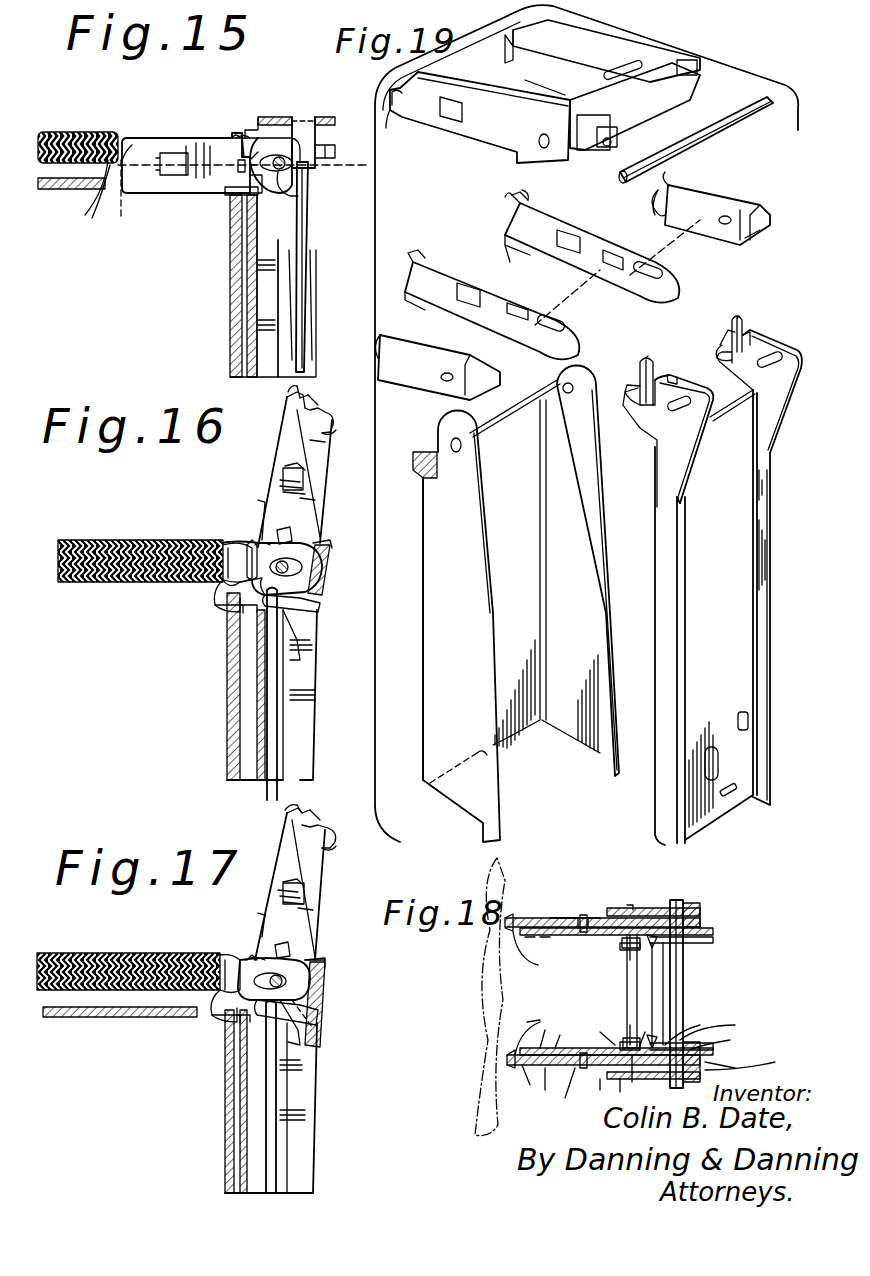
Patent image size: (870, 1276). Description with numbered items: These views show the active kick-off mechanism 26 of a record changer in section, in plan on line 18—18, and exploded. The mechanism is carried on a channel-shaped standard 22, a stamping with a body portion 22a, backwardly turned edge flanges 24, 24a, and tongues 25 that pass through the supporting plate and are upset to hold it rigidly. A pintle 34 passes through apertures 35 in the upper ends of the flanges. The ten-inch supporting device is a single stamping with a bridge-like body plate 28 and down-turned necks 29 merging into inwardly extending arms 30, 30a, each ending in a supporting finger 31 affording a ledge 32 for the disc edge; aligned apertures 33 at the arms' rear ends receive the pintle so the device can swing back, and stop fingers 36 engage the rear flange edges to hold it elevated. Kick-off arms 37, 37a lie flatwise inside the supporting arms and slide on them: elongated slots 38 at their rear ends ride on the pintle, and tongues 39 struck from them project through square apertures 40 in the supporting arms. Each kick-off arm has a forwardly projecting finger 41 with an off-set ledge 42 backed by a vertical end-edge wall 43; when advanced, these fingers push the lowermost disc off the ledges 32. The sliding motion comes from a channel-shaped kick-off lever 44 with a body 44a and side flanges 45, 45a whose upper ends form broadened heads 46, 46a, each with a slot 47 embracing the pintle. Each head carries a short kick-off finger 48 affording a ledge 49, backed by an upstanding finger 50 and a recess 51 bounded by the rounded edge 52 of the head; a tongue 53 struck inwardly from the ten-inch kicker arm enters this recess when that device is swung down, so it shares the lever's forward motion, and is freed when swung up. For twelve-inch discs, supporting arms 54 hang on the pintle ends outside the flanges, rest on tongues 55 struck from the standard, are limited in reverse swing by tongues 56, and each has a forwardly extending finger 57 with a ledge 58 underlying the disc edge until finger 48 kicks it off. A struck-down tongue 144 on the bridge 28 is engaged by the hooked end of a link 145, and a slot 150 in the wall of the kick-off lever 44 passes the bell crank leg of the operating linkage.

In FIG. 15, the cable 18 is at (72, 160).
In FIG. 15, the channel-shaped standard 22 is at (230, 323).
In FIG. 16, the channel-shaped standard 22 is at (227, 696).
In FIG. 17, the channel-shaped standard 22 is at (225, 1106).
In FIG. 18, the channel-shaped standard 22 is at (627, 994).
In FIG. 19, the channel-shaped standard 22 is at (452, 607).
In FIG. 19, the body portion 22a is at (537, 512).
In FIG. 15, the edge flange 24 is at (310, 311).
In FIG. 16, the edge flange 24 is at (305, 755).
In FIG. 18, the edge flange 24 is at (703, 915).
In FIG. 19, the edge flange 24 is at (437, 538).
In FIG. 17, the edge flange 24a is at (300, 1137).
In FIG. 19, the edge flange 24a is at (590, 505).
In FIG. 19, the tongues 25 is at (600, 767).
In FIG. 15, the active kick-off mechanism 26 is at (236, 124).
In FIG. 16, the active kick-off mechanism 26 is at (232, 535).
In FIG. 17, the active kick-off mechanism 26 is at (243, 950).
In FIG. 18, the active kick-off mechanism 26 is at (562, 918).
In FIG. 15, the bridge-like body plate 28 is at (280, 117).
In FIG. 16, the bridge-like body plate 28 is at (324, 580).
In FIG. 17, the bridge-like body plate 28 is at (322, 990).
In FIG. 19, the bridge-like body plate 28 is at (688, 93).
In FIG. 15, the down-turned neck 29 is at (252, 130).
In FIG. 17, the down-turned neck 29 is at (325, 957).
In FIG. 19, the down-turned neck 29 is at (525, 90).
In FIG. 16, the inwardly extending arm 30 is at (330, 414).
In FIG. 18, the inwardly extending arm 30 is at (522, 1065).
In FIG. 19, the inwardly extending arm 30 is at (472, 138).
In FIG. 17, the inwardly extending arm 30a is at (338, 832).
In FIG. 18, the inwardly extending arm 30a is at (535, 918).
In FIG. 19, the inwardly extending arm 30a is at (530, 38).
In FIG. 16, the supporting finger 31 is at (290, 393).
In FIG. 17, the supporting finger 31 is at (287, 808).
In FIG. 18, the supporting finger 31 is at (512, 918).
In FIG. 19, the supporting finger 31 is at (392, 108).
In FIG. 15, the ledge 32 is at (132, 200).
In FIG. 16, the ledge 32 is at (313, 386).
In FIG. 17, the ledge 32 is at (310, 805).
In FIG. 19, the ledge 32 is at (388, 128).
In FIG. 19, the aligned apertures 33 is at (546, 148).
In FIG. 15, the pintle 34 is at (305, 204).
In FIG. 16, the pintle 34 is at (312, 527).
In FIG. 17, the pintle 34 is at (300, 950).
In FIG. 18, the pintle 34 is at (684, 985).
In FIG. 19, the pintle 34 is at (720, 132).
In FIG. 19, the apertures 35 is at (456, 438).
In FIG. 19, the stop fingers 36 is at (698, 72).
In FIG. 16, the kick-off arm 37 is at (285, 446).
In FIG. 18, the kick-off arm 37 is at (560, 1048).
In FIG. 19, the kick-off arm 37 is at (520, 252).
In FIG. 15, the kick-off arm 37a is at (170, 193).
In FIG. 17, the kick-off arm 37a is at (310, 860).
In FIG. 18, the kick-off arm 37a is at (555, 937).
In FIG. 19, the kick-off arm 37a is at (588, 270).
In FIG. 18, the elongated slots 38 is at (690, 948).
In FIG. 19, the elongated slots 38 is at (665, 275).
In FIG. 15, the tongues 39 is at (170, 153).
In FIG. 16, the tongues 39 is at (305, 475).
In FIG. 17, the tongues 39 is at (306, 887).
In FIG. 18, the tongues 39 is at (590, 916).
In FIG. 19, the tongues 39 is at (582, 238).
In FIG. 16, the square apertures 40 is at (285, 466).
In FIG. 17, the square apertures 40 is at (285, 883).
In FIG. 18, the square apertures 40 is at (583, 918).
In FIG. 19, the square apertures 40 is at (455, 118).
In FIG. 15, the forwardly projecting finger 41 is at (100, 215).
In FIG. 16, the forwardly projecting finger 41 is at (292, 415).
In FIG. 17, the forwardly projecting finger 41 is at (290, 832).
In FIG. 18, the forwardly projecting finger 41 is at (530, 940).
In FIG. 19, the forwardly projecting finger 41 is at (515, 248).
In FIG. 15, the off-set ledge 42 is at (84, 216).
In FIG. 16, the off-set ledge 42 is at (320, 400).
In FIG. 17, the off-set ledge 42 is at (322, 817).
In FIG. 18, the off-set ledge 42 is at (513, 938).
In FIG. 19, the off-set ledge 42 is at (508, 198).
In FIG. 15, the vertical end-edge wall 43 is at (130, 147).
In FIG. 16, the vertical end-edge wall 43 is at (341, 431).
In FIG. 17, the vertical end-edge wall 43 is at (342, 846).
In FIG. 18, the vertical end-edge wall 43 is at (545, 937).
In FIG. 19, the vertical end-edge wall 43 is at (525, 200).
In FIG. 15, the kick-off lever 44 is at (247, 280).
In FIG. 16, the kick-off lever 44 is at (227, 727).
In FIG. 17, the kick-off lever 44 is at (240, 1131).
In FIG. 18, the kick-off lever 44 is at (652, 1008).
In FIG. 19, the body 44a is at (743, 564).
In FIG. 15, the side flange 45 is at (265, 300).
In FIG. 17, the side flange 45 is at (278, 1112).
In FIG. 19, the side flange 45 is at (672, 617).
In FIG. 16, the side flange 45a is at (300, 727).
In FIG. 19, the side flange 45a is at (767, 595).
In FIG. 15, the broadened head 46 is at (295, 188).
In FIG. 16, the broadened head 46 is at (290, 630).
In FIG. 17, the broadened head 46 is at (295, 1000).
In FIG. 18, the broadened head 46 is at (715, 933).
In FIG. 19, the broadened head 46 is at (683, 443).
In FIG. 19, the broadened head 46a is at (788, 410).
In FIG. 16, the slot 47 is at (303, 565).
In FIG. 17, the slot 47 is at (258, 965).
In FIG. 18, the slot 47 is at (700, 942).
In FIG. 19, the slot 47 is at (683, 398).
In FIG. 15, the kick-off finger 48 is at (252, 165).
In FIG. 16, the kick-off finger 48 is at (225, 585).
In FIG. 17, the kick-off finger 48 is at (218, 1005).
In FIG. 18, the kick-off finger 48 is at (622, 942).
In FIG. 19, the kick-off finger 48 is at (628, 408).
In FIG. 15, the ledge 49 is at (220, 178).
In FIG. 16, the ledge 49 is at (225, 545).
In FIG. 17, the ledge 49 is at (161, 1028).
In FIG. 18, the ledge 49 is at (628, 950).
In FIG. 19, the ledge 49 is at (636, 380).
In FIG. 15, the upstanding finger 50 is at (236, 138).
In FIG. 16, the upstanding finger 50 is at (232, 543).
In FIG. 17, the upstanding finger 50 is at (232, 958).
In FIG. 18, the upstanding finger 50 is at (625, 914).
In FIG. 19, the upstanding finger 50 is at (640, 362).
In FIG. 15, the recess 51 is at (243, 138).
In FIG. 16, the recess 51 is at (252, 540).
In FIG. 17, the recess 51 is at (245, 955).
In FIG. 19, the recess 51 is at (650, 358).
In FIG. 15, the rounded edge 52 is at (246, 170).
In FIG. 16, the rounded edge 52 is at (260, 500).
In FIG. 17, the rounded edge 52 is at (250, 955).
In FIG. 19, the rounded edge 52 is at (670, 372).
In FIG. 15, the tongue 53 is at (235, 195).
In FIG. 16, the tongue 53 is at (290, 530).
In FIG. 17, the tongue 53 is at (288, 945).
In FIG. 18, the tongue 53 is at (650, 950).
In FIG. 19, the tongue 53 is at (620, 258).
In FIG. 16, the supporting arm 54 is at (222, 607).
In FIG. 17, the supporting arm 54 is at (220, 1020).
In FIG. 18, the supporting arm 54 is at (652, 908).
In FIG. 19, the supporting arm 54 is at (715, 190).
In FIG. 18, the tongues 55 is at (637, 905).
In FIG. 19, the tongues 55 is at (415, 456).
In FIG. 15, the tongues 56 is at (335, 150).
In FIG. 16, the tongues 56 is at (334, 539).
In FIG. 17, the tongues 56 is at (326, 966).
In FIG. 19, the tongues 56 is at (760, 228).
In FIG. 19, the forwardly extending finger 57 is at (660, 196).
In FIG. 18, the ledge 58 is at (613, 1079).
In FIG. 19, the ledge 58 is at (672, 180).
In FIG. 15, the struck-down tongue 144 is at (310, 134).
In FIG. 16, the struck-down tongue 144 is at (296, 600).
In FIG. 17, the struck-down tongue 144 is at (300, 1015).
In FIG. 19, the struck-down tongue 144 is at (617, 134).
In FIG. 15, the link 145 is at (305, 263).
In FIG. 16, the link 145 is at (278, 697).
In FIG. 17, the link 145 is at (278, 1040).
In FIG. 19, the slot 150 is at (718, 765).